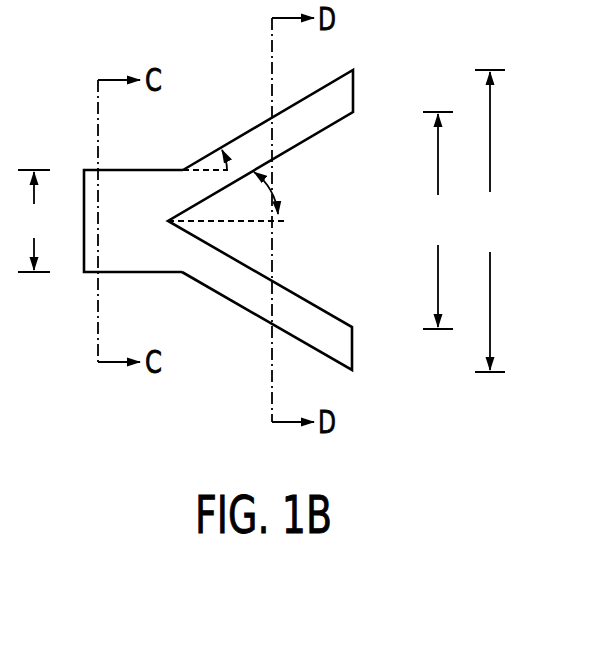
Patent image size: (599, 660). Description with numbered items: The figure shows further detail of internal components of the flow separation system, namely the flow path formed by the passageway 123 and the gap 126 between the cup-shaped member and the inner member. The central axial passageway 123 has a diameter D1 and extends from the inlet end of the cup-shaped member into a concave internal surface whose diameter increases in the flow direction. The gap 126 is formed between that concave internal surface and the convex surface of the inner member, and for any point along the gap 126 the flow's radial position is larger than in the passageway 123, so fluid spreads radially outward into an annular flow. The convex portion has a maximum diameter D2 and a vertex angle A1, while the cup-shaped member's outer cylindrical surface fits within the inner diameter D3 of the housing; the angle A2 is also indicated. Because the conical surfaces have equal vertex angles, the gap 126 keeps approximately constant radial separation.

The central axial passageway 123 is at (137, 257).
The gap 126 is at (237, 293).
The vertex angle A1 is at (278, 193).
The angle A2 is at (244, 152).
The diameter of the central axial passageway D1 is at (34, 221).
The maximum diameter of the convex portion D2 is at (438, 220).
The inner diameter of the housing D3 is at (490, 221).